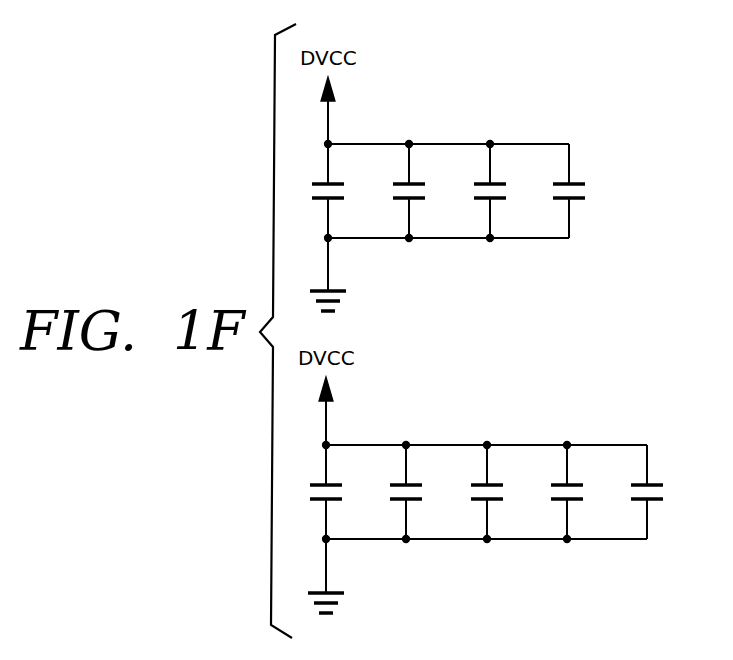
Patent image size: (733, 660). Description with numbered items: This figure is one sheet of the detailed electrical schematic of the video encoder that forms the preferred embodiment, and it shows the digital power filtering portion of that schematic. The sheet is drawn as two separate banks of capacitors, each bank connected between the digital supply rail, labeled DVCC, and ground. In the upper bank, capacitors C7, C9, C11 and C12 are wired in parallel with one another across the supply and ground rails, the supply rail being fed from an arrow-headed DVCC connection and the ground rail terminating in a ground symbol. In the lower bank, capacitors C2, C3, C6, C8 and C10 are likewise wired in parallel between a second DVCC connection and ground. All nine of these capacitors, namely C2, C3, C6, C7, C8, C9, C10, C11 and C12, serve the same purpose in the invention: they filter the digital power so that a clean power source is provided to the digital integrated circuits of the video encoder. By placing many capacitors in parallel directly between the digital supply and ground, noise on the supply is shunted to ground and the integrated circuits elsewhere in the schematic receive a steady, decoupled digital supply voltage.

The capacitor C2 is at (337, 492).
The capacitor C3 is at (417, 492).
The capacitor C6 is at (499, 492).
The capacitor C7 is at (339, 191).
The capacitor C8 is at (579, 492).
The capacitor C9 is at (421, 191).
The capacitor C10 is at (665, 492).
The capacitor C11 is at (508, 191).
The capacitor C12 is at (587, 191).